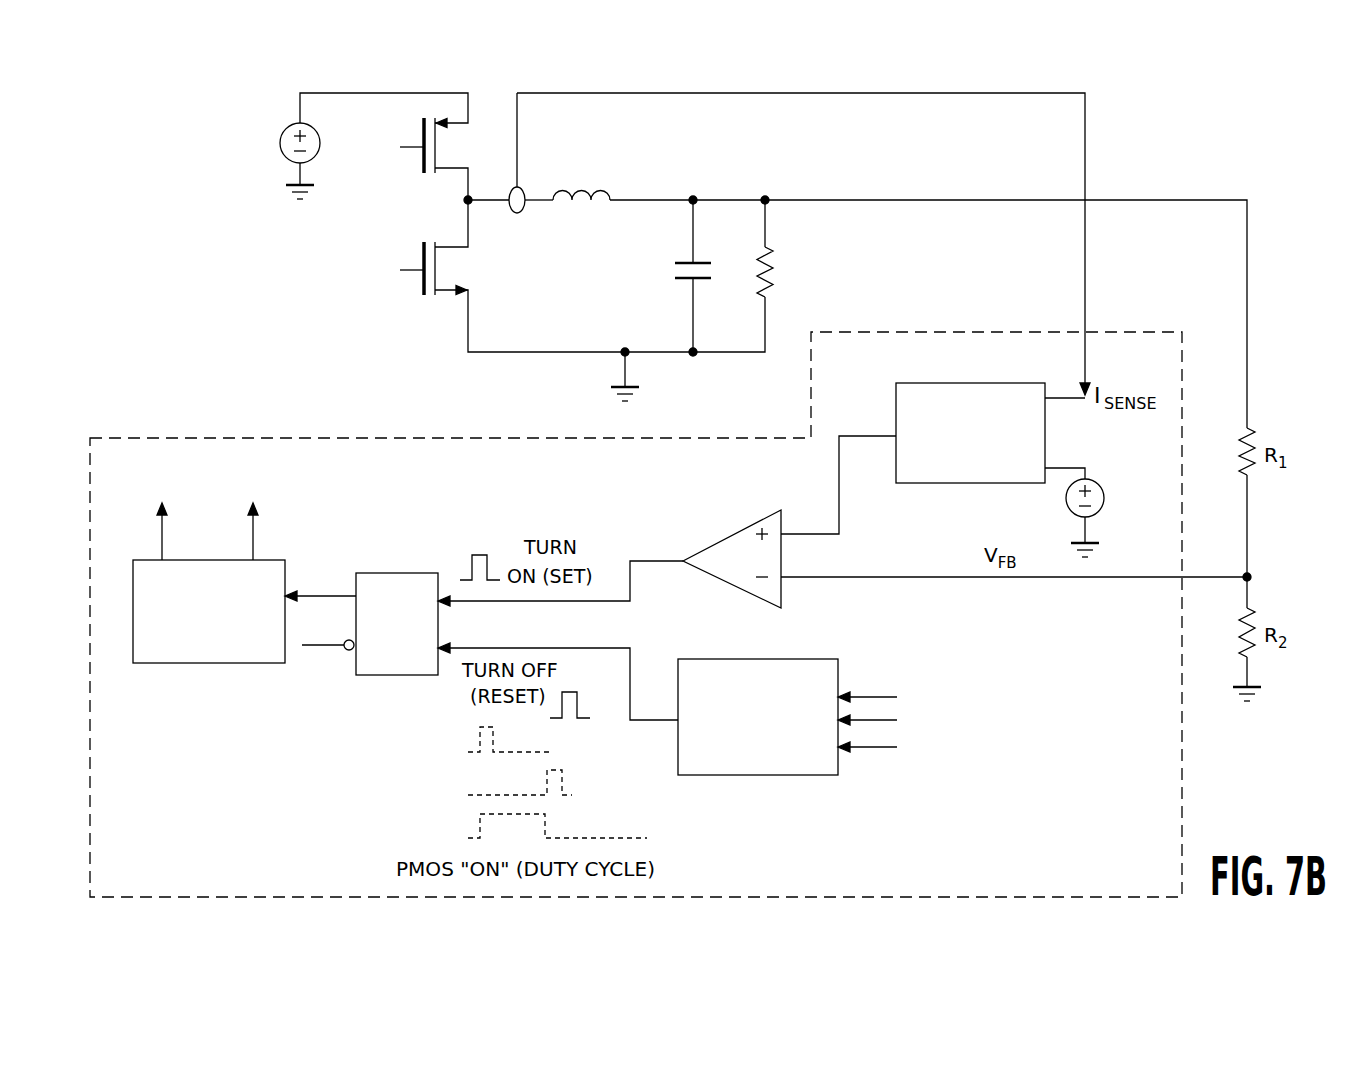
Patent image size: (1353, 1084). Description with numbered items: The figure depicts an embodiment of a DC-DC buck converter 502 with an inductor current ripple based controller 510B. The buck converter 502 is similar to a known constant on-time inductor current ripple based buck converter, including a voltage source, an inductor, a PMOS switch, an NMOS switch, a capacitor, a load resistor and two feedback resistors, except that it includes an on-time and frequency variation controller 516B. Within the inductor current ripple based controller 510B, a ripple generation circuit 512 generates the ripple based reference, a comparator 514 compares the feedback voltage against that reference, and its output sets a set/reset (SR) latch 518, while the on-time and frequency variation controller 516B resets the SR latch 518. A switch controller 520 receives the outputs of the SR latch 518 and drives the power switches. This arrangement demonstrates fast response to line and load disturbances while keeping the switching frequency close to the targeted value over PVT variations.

The DC-DC buck converter 502 is at (1284, 159).
The inductor current ripple based controller 510B is at (1182, 762).
The ripple generation circuit 512 is at (990, 483).
The comparator 514 is at (740, 528).
The on-time and frequency variation controller 516B is at (770, 775).
The set/reset (SR) latch 518 is at (405, 572).
The switch controller 520 is at (210, 663).